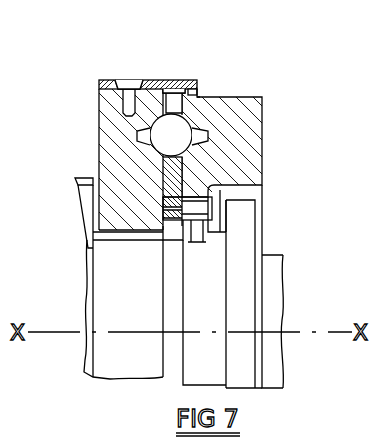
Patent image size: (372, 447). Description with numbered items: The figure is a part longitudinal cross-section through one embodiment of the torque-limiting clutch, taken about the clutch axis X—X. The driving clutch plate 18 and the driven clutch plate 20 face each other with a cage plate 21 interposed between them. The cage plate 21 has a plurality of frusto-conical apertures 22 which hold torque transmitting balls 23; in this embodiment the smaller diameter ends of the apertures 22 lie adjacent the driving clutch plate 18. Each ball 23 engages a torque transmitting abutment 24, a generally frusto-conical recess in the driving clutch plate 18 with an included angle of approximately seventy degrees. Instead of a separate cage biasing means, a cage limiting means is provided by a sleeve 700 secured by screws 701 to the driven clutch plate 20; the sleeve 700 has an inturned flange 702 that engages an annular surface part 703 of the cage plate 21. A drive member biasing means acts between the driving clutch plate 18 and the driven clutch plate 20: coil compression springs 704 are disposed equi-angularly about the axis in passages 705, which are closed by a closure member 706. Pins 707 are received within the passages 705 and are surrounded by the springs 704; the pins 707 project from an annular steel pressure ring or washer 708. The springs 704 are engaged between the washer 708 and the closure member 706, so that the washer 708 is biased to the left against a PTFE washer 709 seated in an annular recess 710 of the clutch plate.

The driving clutch plate 18 is at (253, 132).
The driven clutch plate 20 is at (105, 127).
The cage plate 21 is at (184, 88).
The apertures 22 is at (191, 122).
The balls 23 is at (183, 151).
The torque transmitting abutment 24 is at (204, 117).
The sleeve 700 is at (161, 80).
The screws 701 is at (128, 80).
The inturned flange 702 is at (200, 94).
The annular surface part 703 is at (196, 89).
The coil compression springs 704 is at (211, 232).
The passages 705 is at (166, 206).
The closure member 706 is at (218, 223).
The pins 707 is at (201, 242).
The annular steel pressure ring or washer 708 is at (168, 226).
The PTFE washer 709 is at (165, 205).
The recess 710 is at (96, 176).